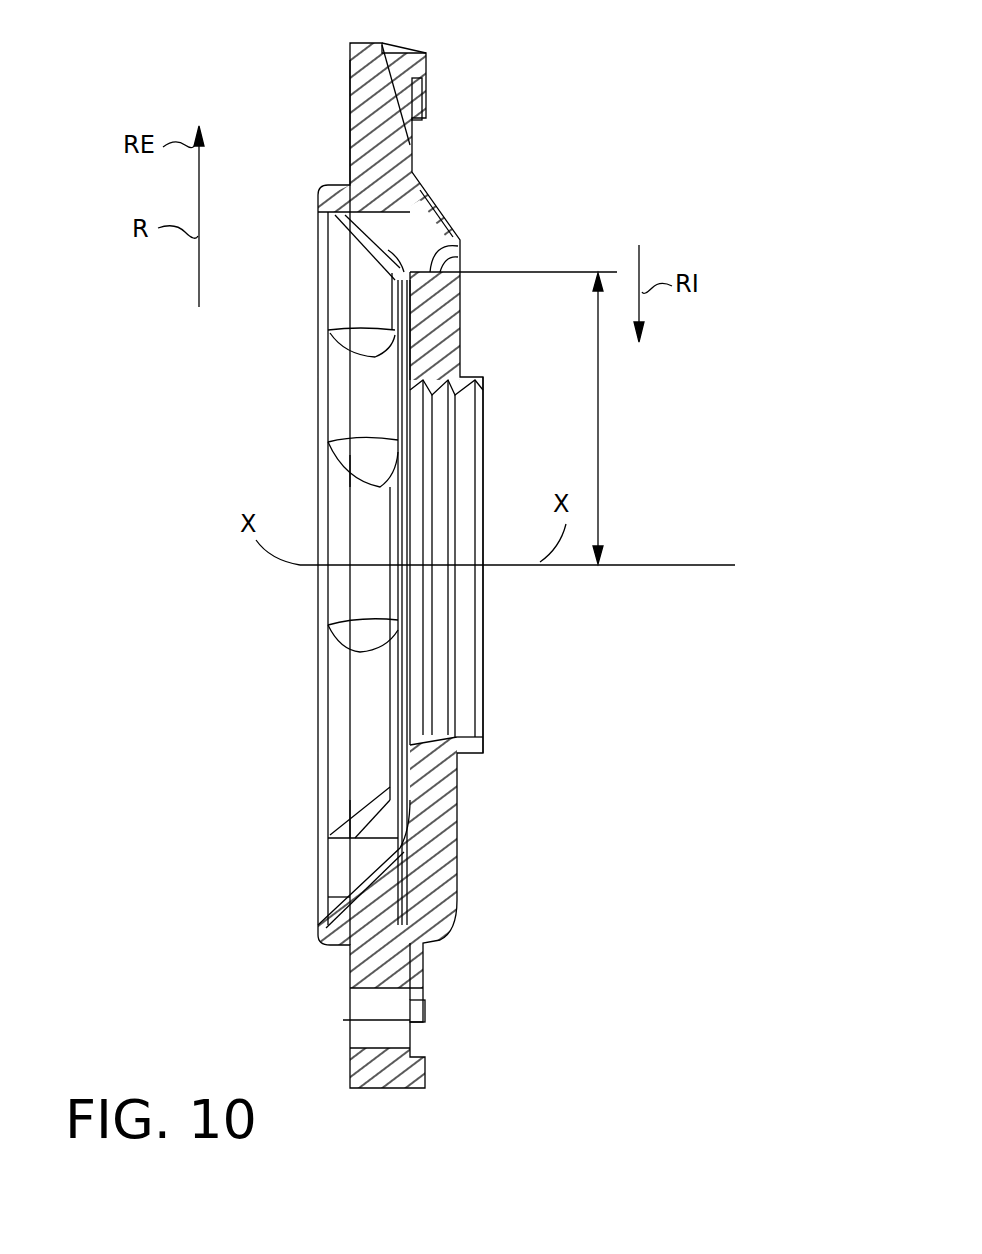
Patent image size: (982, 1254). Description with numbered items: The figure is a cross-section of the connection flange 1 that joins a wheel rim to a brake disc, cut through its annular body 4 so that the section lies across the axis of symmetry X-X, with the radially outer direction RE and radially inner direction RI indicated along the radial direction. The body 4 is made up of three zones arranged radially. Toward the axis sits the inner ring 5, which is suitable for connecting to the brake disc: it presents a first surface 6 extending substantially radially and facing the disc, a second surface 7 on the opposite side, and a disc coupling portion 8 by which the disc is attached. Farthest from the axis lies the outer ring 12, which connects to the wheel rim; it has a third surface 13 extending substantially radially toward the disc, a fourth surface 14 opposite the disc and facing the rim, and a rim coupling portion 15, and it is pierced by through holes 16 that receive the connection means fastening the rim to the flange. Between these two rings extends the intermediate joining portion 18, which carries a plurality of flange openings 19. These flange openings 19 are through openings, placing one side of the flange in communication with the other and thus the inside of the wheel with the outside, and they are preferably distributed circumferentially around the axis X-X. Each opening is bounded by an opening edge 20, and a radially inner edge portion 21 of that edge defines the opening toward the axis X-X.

The connection flange 1 is at (556, 172).
The annular body 4 is at (413, 192).
The inner ring 5 is at (460, 343).
The first surface 6 is at (460, 366).
The second surface 7 is at (395, 350).
The disc coupling portion 8 is at (460, 291).
The outer ring 12 is at (414, 68).
The third surface 13 is at (427, 102).
The fourth surface 14 is at (348, 118).
The rim coupling portion 15 is at (370, 88).
The through holes 16 is at (378, 1045).
The intermediate joining portion 18 is at (427, 900).
The flange openings 19 is at (364, 270).
The opening edge 20 is at (460, 243).
The radially inner edge portion 21 is at (460, 238).